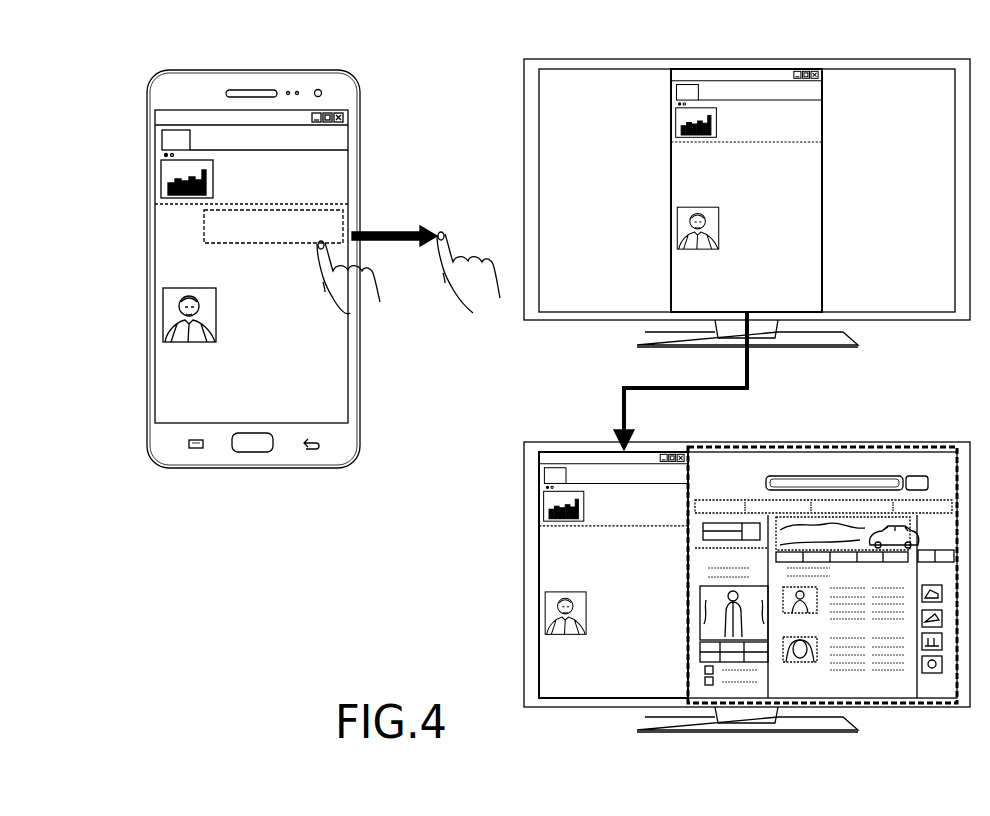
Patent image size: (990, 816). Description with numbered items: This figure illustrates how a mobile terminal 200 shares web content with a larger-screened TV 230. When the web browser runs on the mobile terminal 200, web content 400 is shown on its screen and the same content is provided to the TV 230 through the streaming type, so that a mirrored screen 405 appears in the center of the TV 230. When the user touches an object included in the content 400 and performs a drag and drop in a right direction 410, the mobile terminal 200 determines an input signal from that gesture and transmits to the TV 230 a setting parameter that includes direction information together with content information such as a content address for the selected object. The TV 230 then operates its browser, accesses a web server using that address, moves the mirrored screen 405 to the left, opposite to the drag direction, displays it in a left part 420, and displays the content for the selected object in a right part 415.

The mobile terminal 200 is at (248, 70).
The web content 400 is at (343, 157).
The right direction of drag and drop 410 is at (388, 232).
The TV 230 is at (872, 59).
The mirrored screen 405 is at (741, 69).
The left part 420 is at (571, 452).
The right part 415 is at (820, 447).